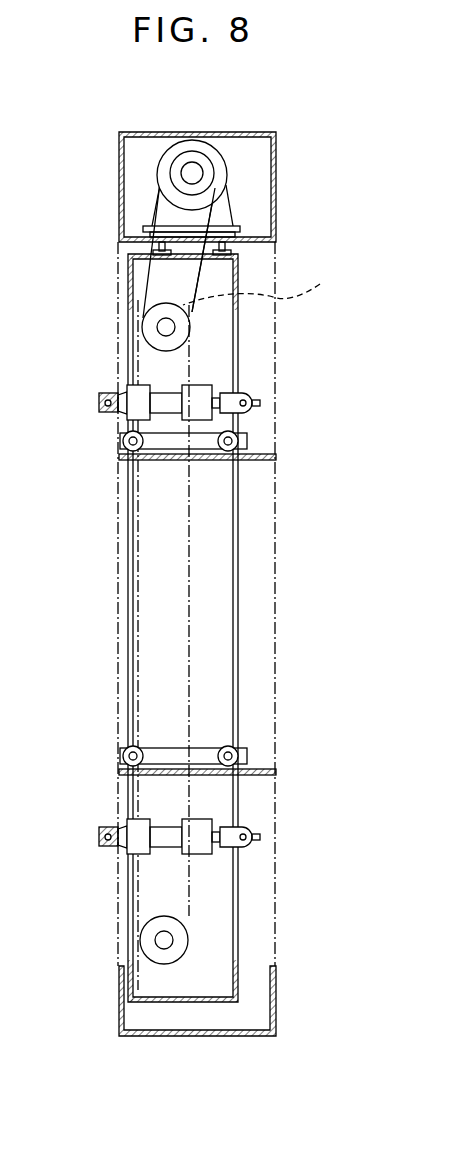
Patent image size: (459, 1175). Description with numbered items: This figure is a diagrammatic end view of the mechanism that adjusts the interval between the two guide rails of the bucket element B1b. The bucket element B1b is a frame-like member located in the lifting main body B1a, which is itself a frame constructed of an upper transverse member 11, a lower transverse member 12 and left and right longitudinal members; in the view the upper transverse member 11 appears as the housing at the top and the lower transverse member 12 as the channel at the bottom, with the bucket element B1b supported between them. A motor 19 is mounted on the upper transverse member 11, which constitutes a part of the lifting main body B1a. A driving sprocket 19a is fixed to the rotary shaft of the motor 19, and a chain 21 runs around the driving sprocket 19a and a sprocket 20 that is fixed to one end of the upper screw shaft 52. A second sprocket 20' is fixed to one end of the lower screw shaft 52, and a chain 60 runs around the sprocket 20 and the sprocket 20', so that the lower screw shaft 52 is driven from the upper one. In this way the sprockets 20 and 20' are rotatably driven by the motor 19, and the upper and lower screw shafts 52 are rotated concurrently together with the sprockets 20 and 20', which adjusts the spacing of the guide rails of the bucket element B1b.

The upper transverse member 11 is at (120, 132).
The lower transverse member 12 is at (170, 1036).
The motor 19 is at (222, 181).
The driving sprocket 19a is at (178, 174).
The lifting main body B1a is at (276, 132).
The bucket element B1b is at (240, 262).
The sprocket 20 is at (250, 335).
The sprocket 20' is at (238, 936).
The chain 21 is at (193, 307).
The screw shaft 52 is at (166, 327).
The chain 60 is at (189, 642).